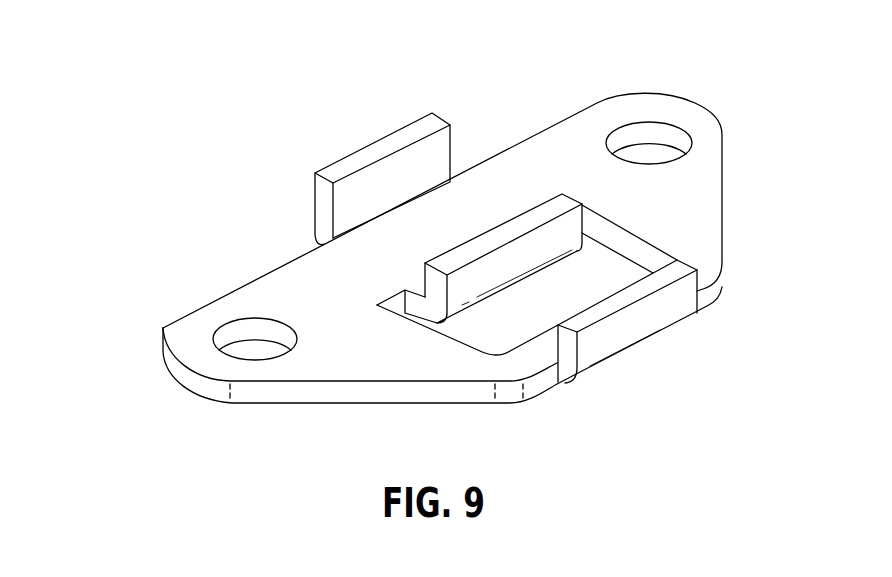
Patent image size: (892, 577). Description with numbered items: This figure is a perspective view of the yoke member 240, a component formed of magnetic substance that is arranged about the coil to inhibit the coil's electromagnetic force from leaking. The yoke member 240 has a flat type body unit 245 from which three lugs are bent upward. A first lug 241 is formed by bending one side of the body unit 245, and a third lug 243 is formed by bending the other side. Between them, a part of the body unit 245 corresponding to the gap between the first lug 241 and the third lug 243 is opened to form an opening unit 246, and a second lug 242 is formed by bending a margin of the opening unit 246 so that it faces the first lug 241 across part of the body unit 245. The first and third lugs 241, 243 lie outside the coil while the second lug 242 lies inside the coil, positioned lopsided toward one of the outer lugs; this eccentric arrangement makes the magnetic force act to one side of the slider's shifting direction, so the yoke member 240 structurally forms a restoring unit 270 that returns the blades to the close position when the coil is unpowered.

The yoke member 240 is at (190, 333).
The first lug 241 is at (370, 154).
The second lug 242 is at (526, 218).
The third lug 243 is at (652, 322).
The body unit 245 is at (463, 205).
The opening unit 246 is at (597, 260).
The restoring unit 270 is at (374, 239).